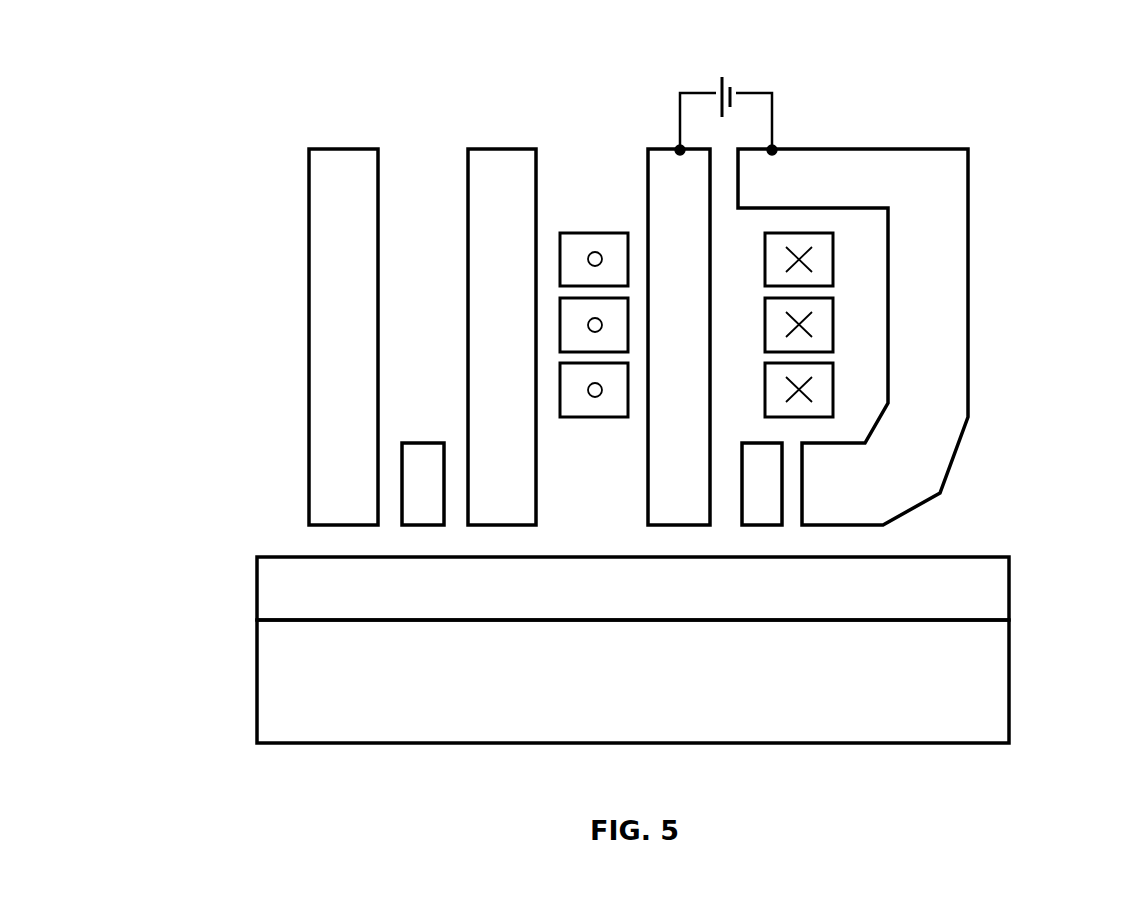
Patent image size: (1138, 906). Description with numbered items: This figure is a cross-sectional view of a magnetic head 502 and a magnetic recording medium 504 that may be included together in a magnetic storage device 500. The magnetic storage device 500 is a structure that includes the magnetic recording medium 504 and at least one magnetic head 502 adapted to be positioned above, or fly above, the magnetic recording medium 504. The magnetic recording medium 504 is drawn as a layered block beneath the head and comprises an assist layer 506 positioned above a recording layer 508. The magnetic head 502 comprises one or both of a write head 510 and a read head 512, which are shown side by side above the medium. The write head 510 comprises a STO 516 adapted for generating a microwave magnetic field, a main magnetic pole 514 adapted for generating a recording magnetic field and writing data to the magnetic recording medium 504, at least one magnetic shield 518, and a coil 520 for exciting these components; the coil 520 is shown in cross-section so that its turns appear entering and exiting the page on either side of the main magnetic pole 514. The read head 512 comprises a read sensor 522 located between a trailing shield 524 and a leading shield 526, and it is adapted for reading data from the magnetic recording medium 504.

The magnetic storage device 500 is at (255, 138).
The magnetic head 502 is at (1040, 148).
The magnetic recording medium 504 is at (1040, 557).
The assist layer 506 is at (633, 588).
The recording layer 508 is at (633, 681).
The write head 510 is at (970, 65).
The read head 512 is at (537, 65).
The main magnetic pole 514 is at (679, 337).
The STO 516 is at (742, 452).
The magnetic shield 518 is at (853, 337).
The coil 520 is at (593, 232).
The read sensor 522 is at (422, 442).
The trailing shield 524 is at (343, 337).
The leading shield 526 is at (502, 337).